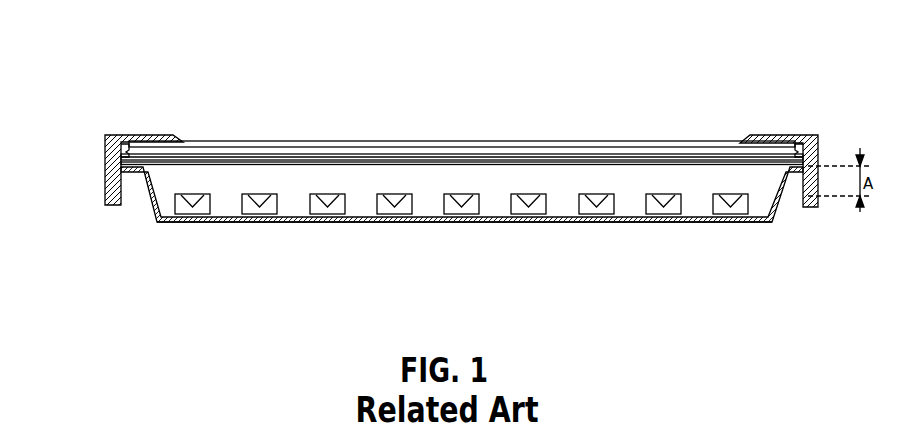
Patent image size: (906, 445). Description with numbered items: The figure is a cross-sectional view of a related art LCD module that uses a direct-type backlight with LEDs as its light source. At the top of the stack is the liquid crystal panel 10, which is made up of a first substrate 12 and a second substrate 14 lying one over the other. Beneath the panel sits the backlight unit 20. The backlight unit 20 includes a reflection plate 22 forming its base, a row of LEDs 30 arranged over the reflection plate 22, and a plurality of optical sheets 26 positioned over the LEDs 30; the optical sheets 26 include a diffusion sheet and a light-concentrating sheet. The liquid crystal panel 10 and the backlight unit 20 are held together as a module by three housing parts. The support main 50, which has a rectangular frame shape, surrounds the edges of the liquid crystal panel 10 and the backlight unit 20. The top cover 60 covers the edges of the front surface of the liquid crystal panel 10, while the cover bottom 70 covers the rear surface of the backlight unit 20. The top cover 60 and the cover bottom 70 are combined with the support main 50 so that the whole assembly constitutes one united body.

The liquid crystal panel 10 is at (442, 50).
The first substrate 12 is at (368, 154).
The second substrate 14 is at (410, 141).
The backlight unit 20 is at (345, 298).
The reflection plate 22 is at (420, 222).
The optical sheets 26 is at (356, 165).
The LEDs 30 is at (386, 214).
The support main 50 is at (108, 160).
The top cover 60 is at (137, 134).
The cover bottom 70 is at (212, 222).